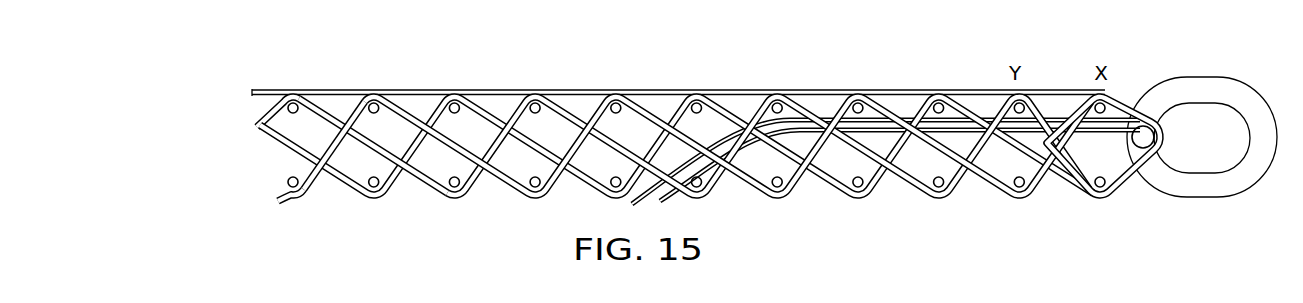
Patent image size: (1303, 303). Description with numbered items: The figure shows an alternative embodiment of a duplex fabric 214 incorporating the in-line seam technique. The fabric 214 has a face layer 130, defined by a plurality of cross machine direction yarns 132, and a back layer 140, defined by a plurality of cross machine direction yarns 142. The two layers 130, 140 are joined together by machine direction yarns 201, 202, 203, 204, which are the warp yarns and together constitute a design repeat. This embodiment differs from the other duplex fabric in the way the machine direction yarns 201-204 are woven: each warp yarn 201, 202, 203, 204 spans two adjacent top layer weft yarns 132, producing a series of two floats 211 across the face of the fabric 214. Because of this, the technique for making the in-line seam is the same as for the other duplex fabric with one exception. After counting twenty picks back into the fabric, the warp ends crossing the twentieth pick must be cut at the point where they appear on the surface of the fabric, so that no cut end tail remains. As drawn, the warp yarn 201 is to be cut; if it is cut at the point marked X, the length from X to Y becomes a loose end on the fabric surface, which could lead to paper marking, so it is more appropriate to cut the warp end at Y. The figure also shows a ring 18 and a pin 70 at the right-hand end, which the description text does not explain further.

The ring 18 is at (1241, 181).
The pin 70 is at (1147, 134).
The face layer 130 is at (238, 108).
The cross machine direction yarns 132 is at (624, 103).
The back layer 140 is at (269, 185).
The cross machine direction yarns 142 is at (777, 184).
The machine direction yarn 201 is at (421, 93).
The machine direction yarn 202 is at (324, 93).
The machine direction yarn 203 is at (337, 175).
The machine direction yarn 204 is at (364, 155).
The floats 211 is at (972, 92).
The duplex fabric 214 is at (756, 80).